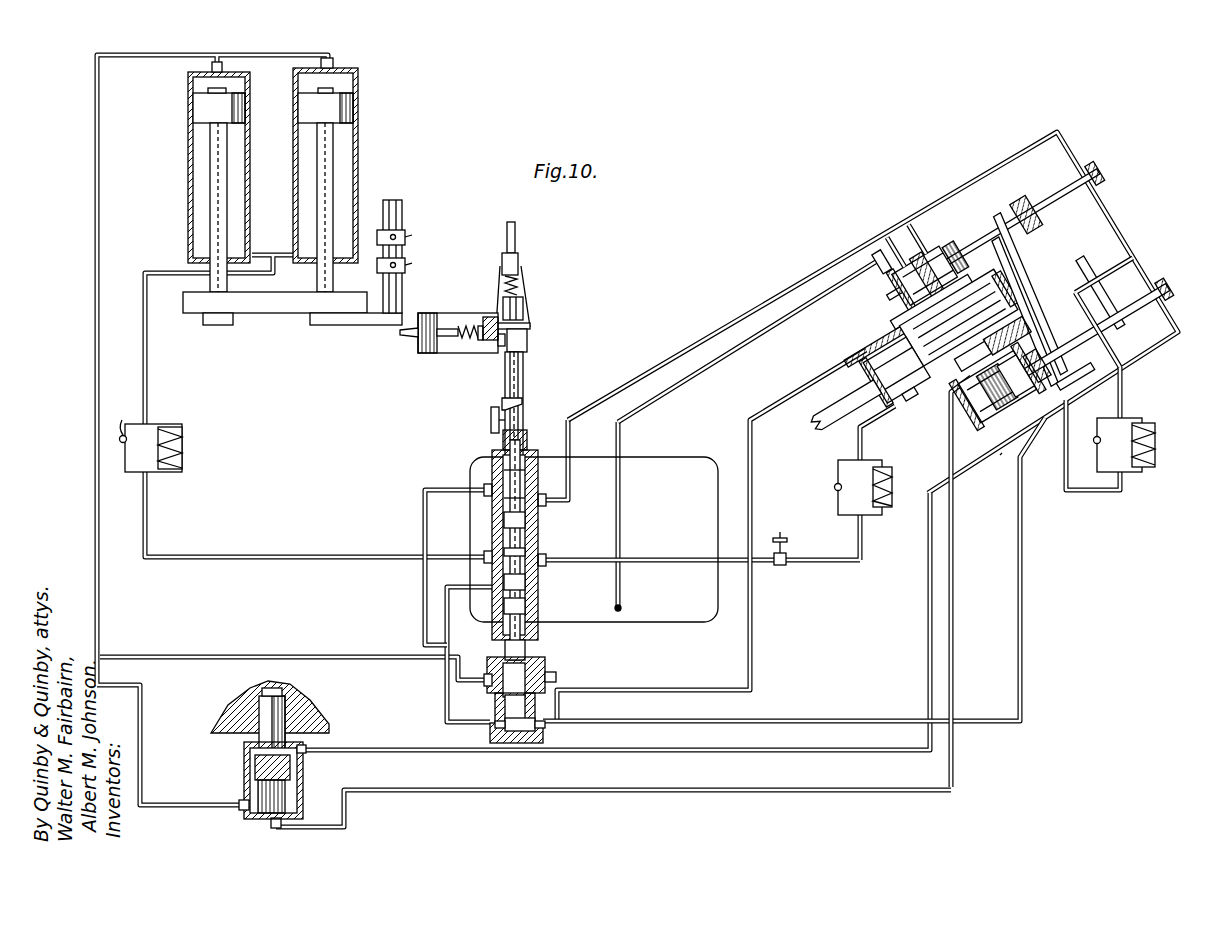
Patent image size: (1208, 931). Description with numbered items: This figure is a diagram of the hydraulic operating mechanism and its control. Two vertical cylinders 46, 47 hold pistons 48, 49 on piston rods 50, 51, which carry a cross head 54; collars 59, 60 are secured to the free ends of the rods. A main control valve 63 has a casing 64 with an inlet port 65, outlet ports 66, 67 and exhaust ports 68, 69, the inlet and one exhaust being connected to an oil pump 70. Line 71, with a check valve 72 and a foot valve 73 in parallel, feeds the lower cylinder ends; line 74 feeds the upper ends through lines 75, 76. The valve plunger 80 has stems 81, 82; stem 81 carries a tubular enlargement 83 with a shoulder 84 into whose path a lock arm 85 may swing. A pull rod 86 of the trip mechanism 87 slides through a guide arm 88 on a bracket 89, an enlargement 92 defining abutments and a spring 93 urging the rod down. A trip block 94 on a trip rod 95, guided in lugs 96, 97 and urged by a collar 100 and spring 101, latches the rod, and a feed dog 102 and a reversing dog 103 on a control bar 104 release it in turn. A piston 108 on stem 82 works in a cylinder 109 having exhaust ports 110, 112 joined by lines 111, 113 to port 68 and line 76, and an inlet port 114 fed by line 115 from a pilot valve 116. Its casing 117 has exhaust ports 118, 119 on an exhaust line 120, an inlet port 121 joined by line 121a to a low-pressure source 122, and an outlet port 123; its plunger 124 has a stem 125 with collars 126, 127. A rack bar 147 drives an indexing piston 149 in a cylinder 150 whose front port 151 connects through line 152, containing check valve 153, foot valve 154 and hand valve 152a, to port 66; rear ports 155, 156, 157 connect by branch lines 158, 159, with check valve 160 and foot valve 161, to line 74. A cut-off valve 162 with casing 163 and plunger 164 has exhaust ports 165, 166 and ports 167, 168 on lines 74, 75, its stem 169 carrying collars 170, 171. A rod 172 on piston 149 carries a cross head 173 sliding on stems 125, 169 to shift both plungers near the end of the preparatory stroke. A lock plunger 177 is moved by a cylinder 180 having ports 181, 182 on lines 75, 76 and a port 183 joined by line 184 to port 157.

The cylinder 46 is at (188, 183).
The cylinder 47 is at (358, 175).
The piston 48 is at (193, 110).
The piston 49 is at (353, 110).
The piston rod 50 is at (210, 222).
The piston rod 51 is at (333, 200).
The cross head 54 is at (272, 313).
The collar 59 is at (220, 325).
The collar 60 is at (320, 325).
The main control valve 63 is at (543, 536).
The cylindrical casing 64 is at (527, 520).
The inlet port 65 is at (540, 582).
The outlet port 66 is at (548, 552).
The outlet port 67 is at (540, 602).
The exhaust port 68 is at (555, 502).
The exhaust port 69 is at (486, 515).
The oil pump 70 is at (680, 457).
The line 71 is at (306, 556).
The check valve 72 is at (125, 418).
The foot valve 73 is at (183, 436).
The line 74 is at (680, 720).
The line 75 is at (954, 630).
The line 76 is at (97, 540).
The valve plunger 80 is at (504, 540).
The upper valve stem 81 is at (518, 428).
The lower valve stem 82 is at (527, 650).
The tubular enlargement 83 is at (524, 380).
The annular shoulder 84 is at (522, 401).
The lock arm 85 is at (491, 424).
The pull rod 86 is at (515, 236).
The trip mechanism 87 is at (534, 316).
The guide arm 88 is at (518, 262).
The bracket 89 is at (528, 350).
The enlargement 92 is at (524, 304).
The coil spring 93 is at (518, 285).
The trip block 94 is at (531, 331).
The trip rod 95 is at (408, 337).
The lug 96 is at (430, 320).
The lug 97 is at (490, 317).
The collar 100 is at (462, 340).
The coil spring 101 is at (480, 342).
The feed dog 102 is at (412, 264).
The reversing dog 103 is at (412, 236).
The control bar 104 is at (402, 207).
The piston 108 is at (556, 675).
The cylinder 109 is at (510, 743).
The exhaust port 110 is at (484, 682).
The line 111 is at (445, 619).
The exhaust port 112 is at (495, 703).
The line 113 is at (302, 655).
The inlet port 114 is at (546, 728).
The line 115 is at (655, 690).
The pilot valve 116 is at (900, 302).
The casing 117 is at (922, 262).
The exhaust port 118 is at (905, 283).
The exhaust port 119 is at (970, 245).
The exhaust line 120 is at (728, 328).
The inlet port 121 is at (888, 238).
The line 121a is at (748, 342).
The auxiliary source of low pressure fluid 122 is at (622, 608).
The outlet port 123 is at (970, 292).
The valve plunger 124 is at (890, 326).
The stem 125 is at (1040, 205).
The abutment collar 126 is at (1008, 220).
The abutment collar 127 is at (1102, 172).
The rack bar 147 is at (812, 426).
The indexing piston 149 is at (878, 372).
The cylinder 150 is at (862, 430).
The port 151 is at (897, 410).
The line 152 is at (788, 565).
The hand valve 152a is at (783, 524).
The check valve 153 is at (835, 489).
The foot valve 154 is at (885, 510).
The end port 155 is at (1060, 300).
The port 156 is at (1003, 332).
The port 157 is at (992, 352).
The branch line 158 is at (1121, 396).
The branch line 159 is at (1062, 460).
The check valve 160 is at (1098, 436).
The foot valve 161 is at (1156, 436).
The cut-off valve 162 is at (970, 425).
The casing 163 is at (1036, 430).
The plunger 164 is at (982, 412).
The exhaust port 165 is at (993, 428).
The exhaust port 166 is at (1058, 390).
The port 167 is at (1000, 455).
The port 168 is at (975, 385).
The stem 169 is at (1113, 320).
The abutment collar 170 is at (1095, 342).
The abutment collar 171 is at (1163, 286).
The rod 172 is at (1020, 268).
The cross head 173 is at (1020, 292).
The lock plunger 177 is at (262, 738).
The cylinder 180 is at (244, 774).
The outer end port 181 is at (271, 824).
The intermediate port 182 is at (240, 806).
The inner end port 183 is at (306, 748).
The line 184 is at (386, 750).